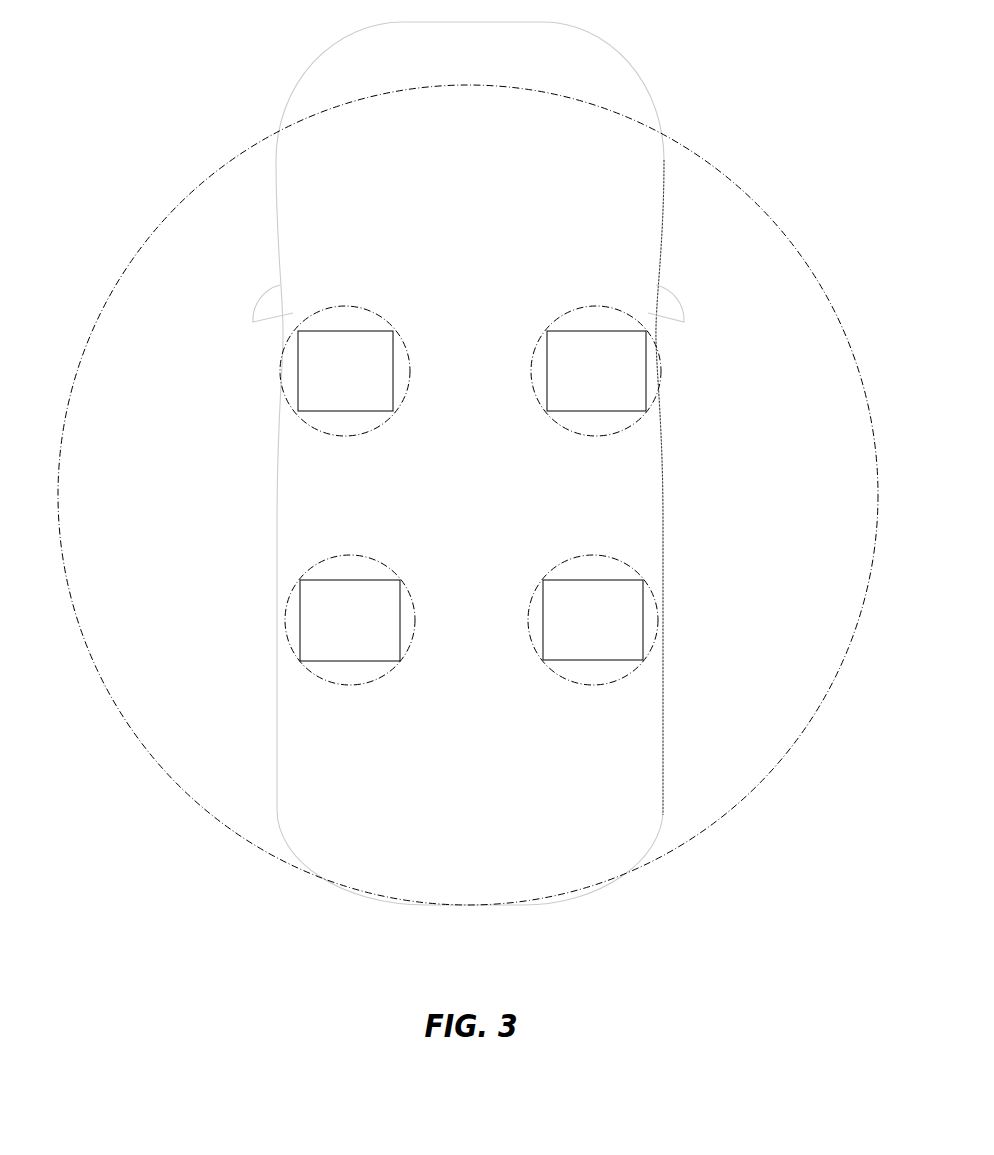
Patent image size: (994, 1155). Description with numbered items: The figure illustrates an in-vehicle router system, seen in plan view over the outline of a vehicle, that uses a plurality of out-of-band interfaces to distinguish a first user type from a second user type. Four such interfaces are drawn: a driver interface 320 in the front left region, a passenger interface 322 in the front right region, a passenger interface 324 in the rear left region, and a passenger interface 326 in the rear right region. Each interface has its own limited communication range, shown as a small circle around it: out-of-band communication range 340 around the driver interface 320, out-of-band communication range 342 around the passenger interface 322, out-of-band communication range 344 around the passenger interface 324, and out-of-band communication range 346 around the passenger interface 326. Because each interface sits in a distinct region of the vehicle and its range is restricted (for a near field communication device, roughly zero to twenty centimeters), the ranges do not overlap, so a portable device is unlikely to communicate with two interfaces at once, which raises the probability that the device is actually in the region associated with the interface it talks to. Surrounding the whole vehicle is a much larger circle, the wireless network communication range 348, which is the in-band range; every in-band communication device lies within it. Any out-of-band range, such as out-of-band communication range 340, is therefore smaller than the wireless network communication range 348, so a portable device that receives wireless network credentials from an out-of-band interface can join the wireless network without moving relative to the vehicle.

The driver interface 320 is at (362, 407).
The passenger interface 322 is at (613, 407).
The passenger interface 324 is at (333, 656).
The passenger interface 326 is at (577, 656).
The out-of-band communication range 340 is at (272, 370).
The out-of-band communication range 342 is at (674, 371).
The out-of-band communication range 344 is at (276, 621).
The out-of-band communication range 346 is at (674, 622).
The wireless network communication range 348 is at (254, 136).